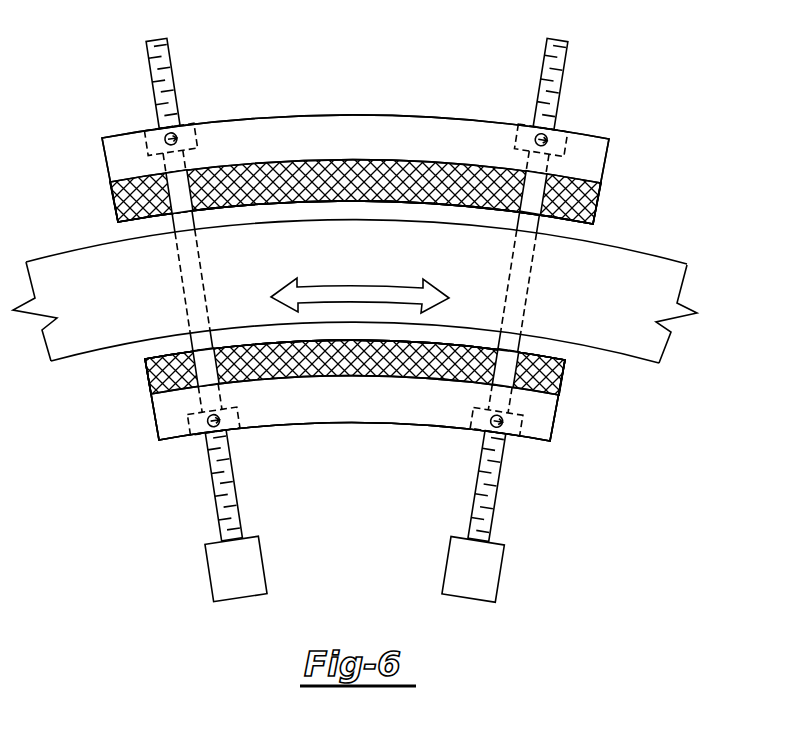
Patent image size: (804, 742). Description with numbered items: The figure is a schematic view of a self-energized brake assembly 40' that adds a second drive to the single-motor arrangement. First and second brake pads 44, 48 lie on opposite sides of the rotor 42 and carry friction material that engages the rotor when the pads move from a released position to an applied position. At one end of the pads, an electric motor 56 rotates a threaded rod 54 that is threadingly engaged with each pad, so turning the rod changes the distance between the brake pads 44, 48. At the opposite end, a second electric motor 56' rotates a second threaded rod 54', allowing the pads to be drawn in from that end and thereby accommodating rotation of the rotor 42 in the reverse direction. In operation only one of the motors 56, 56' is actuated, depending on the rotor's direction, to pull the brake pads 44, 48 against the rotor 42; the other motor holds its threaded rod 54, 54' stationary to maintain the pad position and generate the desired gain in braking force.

The rotor 42 is at (372, 262).
The first brake pad 44 is at (345, 135).
The second brake pad 48 is at (368, 407).
The threaded rod 54 is at (194, 289).
The threaded rod 54' is at (556, 289).
The electric motor 56 is at (236, 568).
The second electric motor 56' is at (473, 570).
The self-energized brake assembly 40' is at (409, 443).